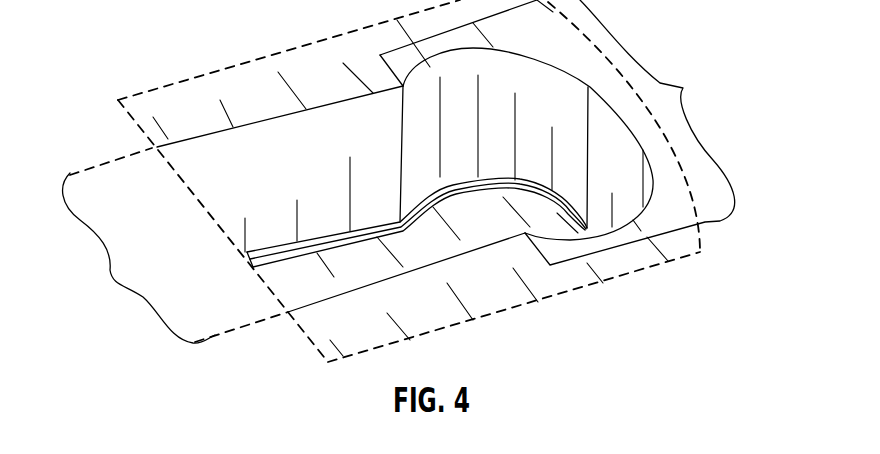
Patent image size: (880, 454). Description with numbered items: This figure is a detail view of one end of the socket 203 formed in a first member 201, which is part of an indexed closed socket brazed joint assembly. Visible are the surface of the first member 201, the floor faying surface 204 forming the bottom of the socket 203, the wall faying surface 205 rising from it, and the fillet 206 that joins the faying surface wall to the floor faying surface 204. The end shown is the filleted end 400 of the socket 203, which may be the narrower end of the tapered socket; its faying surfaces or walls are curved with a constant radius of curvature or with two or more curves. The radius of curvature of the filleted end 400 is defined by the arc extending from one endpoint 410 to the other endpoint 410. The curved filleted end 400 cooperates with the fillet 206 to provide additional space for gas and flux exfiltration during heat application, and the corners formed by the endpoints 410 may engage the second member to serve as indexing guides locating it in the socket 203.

The filleted end 400 is at (684, 88).
The first member 201 is at (177, 107).
The socket 203 is at (110, 268).
The floor faying surface 204 is at (288, 312).
The wall faying surface 205 is at (277, 137).
The fillet 206 is at (250, 263).
The endpoint 410 is at (403, 85).